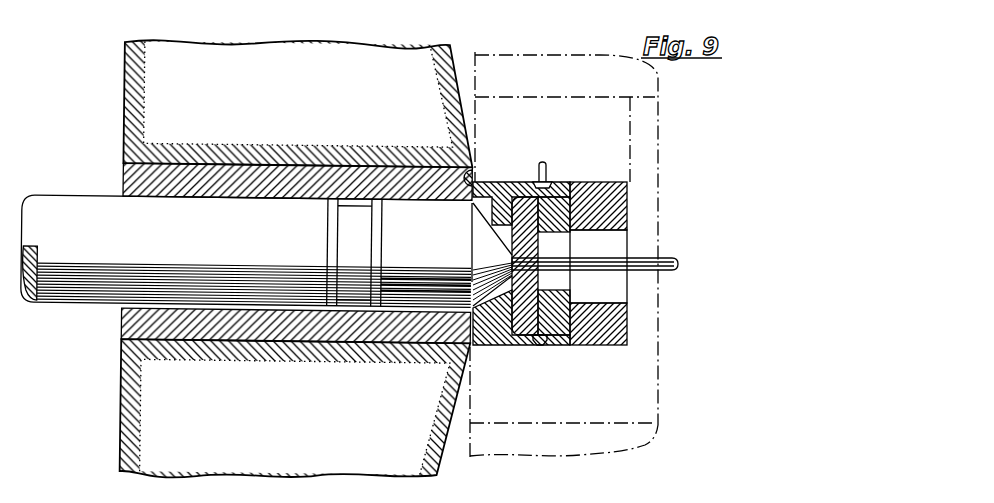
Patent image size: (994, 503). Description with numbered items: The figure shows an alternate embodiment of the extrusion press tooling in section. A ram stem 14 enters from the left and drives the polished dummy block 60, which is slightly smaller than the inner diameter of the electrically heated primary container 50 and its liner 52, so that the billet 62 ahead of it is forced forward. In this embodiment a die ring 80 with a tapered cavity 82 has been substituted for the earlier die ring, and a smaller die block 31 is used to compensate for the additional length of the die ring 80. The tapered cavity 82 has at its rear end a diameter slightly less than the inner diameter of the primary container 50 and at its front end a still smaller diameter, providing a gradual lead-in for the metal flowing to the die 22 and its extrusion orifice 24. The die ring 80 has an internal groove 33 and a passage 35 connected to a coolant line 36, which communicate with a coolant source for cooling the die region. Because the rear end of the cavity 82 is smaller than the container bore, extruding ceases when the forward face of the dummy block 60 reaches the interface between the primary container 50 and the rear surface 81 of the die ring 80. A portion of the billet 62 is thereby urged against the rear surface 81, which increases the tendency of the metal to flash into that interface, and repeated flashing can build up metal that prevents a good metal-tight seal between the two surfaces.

The stem 14 is at (215, 249).
The die 22 is at (511, 237).
The extrusion orifice 24 is at (511, 261).
The die block 31 is at (613, 182).
The internal groove 33 is at (541, 346).
The passage 35 is at (551, 184).
The coolant line 36 is at (548, 169).
The primary container 50 is at (324, 99).
The liner 52 is at (225, 162).
The dummy block 60 is at (373, 240).
The billet 62 is at (450, 258).
The die ring 80 is at (489, 184).
The rear surface 81 is at (474, 166).
The tapered cavity 82 is at (499, 213).